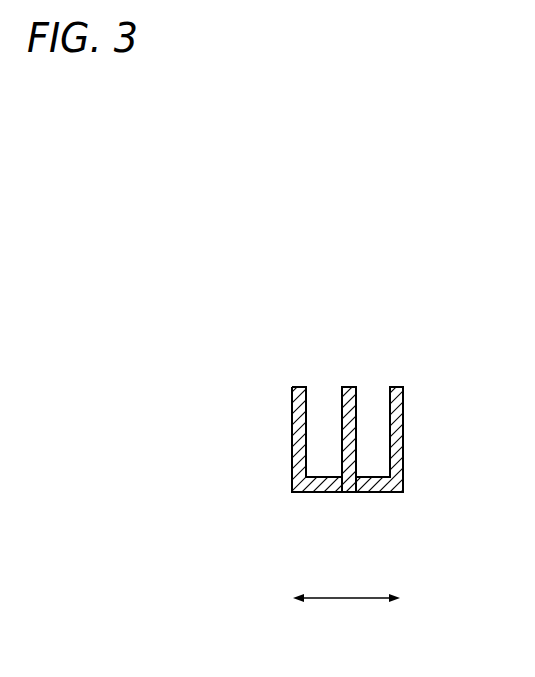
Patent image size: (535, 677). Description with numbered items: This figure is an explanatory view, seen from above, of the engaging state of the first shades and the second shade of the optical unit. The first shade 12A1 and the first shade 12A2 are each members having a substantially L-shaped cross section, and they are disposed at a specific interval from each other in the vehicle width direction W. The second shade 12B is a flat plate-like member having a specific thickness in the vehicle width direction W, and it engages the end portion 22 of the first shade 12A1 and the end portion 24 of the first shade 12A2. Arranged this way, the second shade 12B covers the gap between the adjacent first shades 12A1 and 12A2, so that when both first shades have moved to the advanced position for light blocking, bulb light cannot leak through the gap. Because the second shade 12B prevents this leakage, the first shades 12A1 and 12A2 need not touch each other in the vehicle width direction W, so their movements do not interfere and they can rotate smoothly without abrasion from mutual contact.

The first shade 12A1 is at (297, 412).
The first shade 12A2 is at (397, 413).
The second shade 12B is at (346, 412).
The end portion 22 is at (341, 492).
The end portion 24 is at (356, 492).
The vehicle width direction W is at (346, 614).